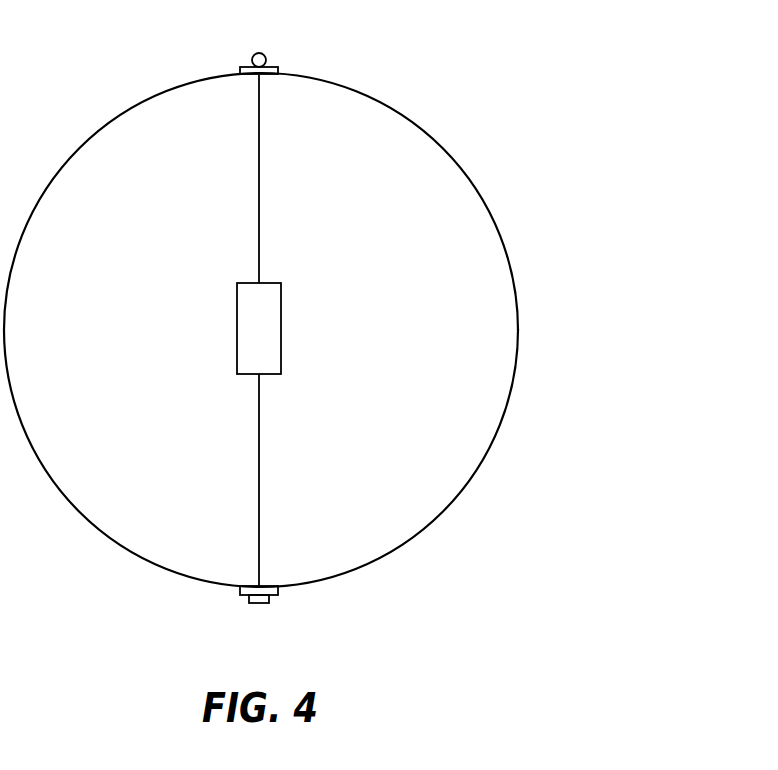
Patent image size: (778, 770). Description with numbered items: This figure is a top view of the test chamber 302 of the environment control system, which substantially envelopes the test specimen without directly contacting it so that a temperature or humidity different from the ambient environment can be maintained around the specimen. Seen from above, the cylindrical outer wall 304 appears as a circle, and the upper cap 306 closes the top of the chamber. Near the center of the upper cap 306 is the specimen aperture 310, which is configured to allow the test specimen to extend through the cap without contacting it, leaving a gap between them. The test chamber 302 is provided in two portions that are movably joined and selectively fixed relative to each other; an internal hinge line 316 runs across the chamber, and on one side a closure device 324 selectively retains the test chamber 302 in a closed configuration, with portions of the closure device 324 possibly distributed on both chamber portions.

The test chamber 302 is at (560, 191).
The cylindrical outer wall 304 is at (517, 328).
The upper cap 306 is at (403, 177).
The specimen aperture 310 is at (281, 316).
The internal hinge line 316 is at (276, 67).
The closure device 324 is at (262, 603).